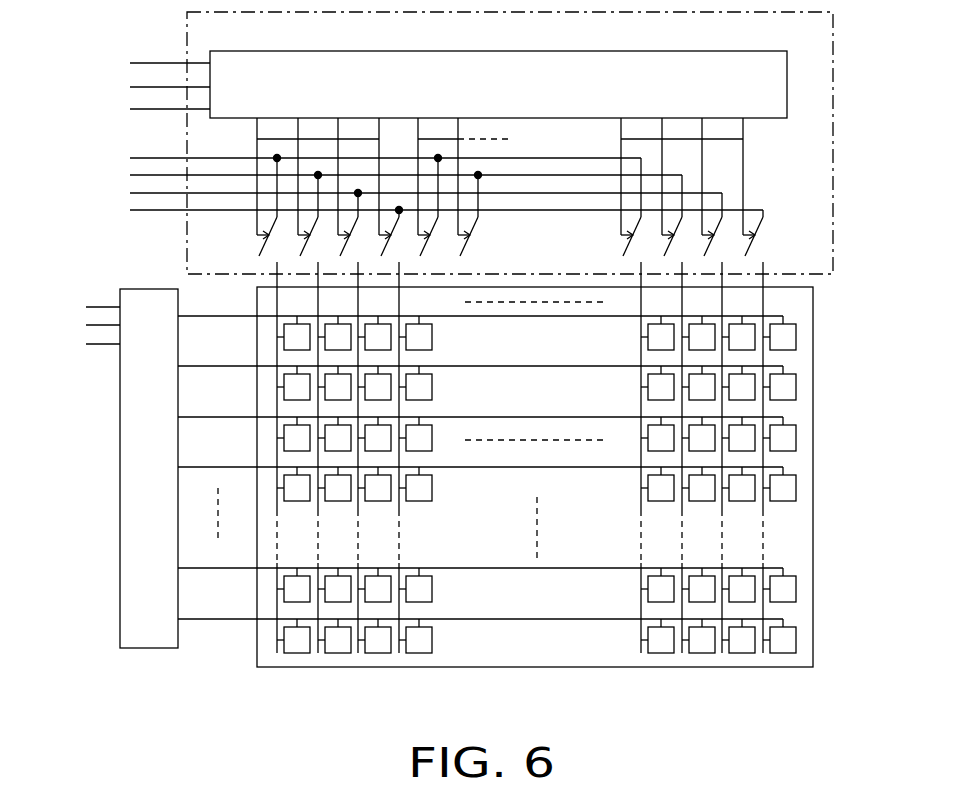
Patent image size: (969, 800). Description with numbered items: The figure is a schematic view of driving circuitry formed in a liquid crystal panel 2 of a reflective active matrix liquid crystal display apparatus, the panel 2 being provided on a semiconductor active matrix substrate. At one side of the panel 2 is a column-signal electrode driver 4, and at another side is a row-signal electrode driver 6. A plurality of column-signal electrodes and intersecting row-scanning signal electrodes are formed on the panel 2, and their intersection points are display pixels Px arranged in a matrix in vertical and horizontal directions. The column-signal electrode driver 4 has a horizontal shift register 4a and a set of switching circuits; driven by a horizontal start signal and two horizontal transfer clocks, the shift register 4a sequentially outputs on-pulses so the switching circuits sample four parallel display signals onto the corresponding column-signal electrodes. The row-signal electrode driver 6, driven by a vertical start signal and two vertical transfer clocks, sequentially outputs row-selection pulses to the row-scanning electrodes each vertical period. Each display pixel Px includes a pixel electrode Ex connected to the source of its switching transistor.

The liquid crystal panel 2 is at (524, 492).
The column-signal electrode driver 4 is at (465, 143).
The horizontal shift register 4a is at (787, 106).
The row-signal electrode driver 6 is at (120, 543).
The display pixel Px is at (797, 333).
The pixel electrode Ex is at (338, 653).